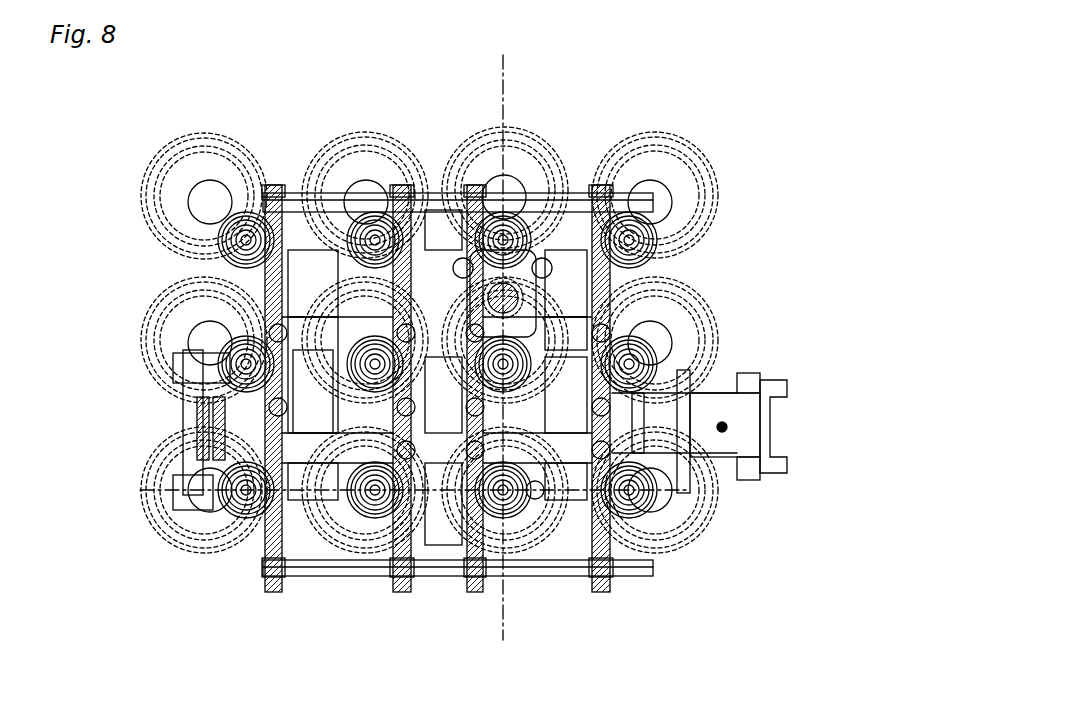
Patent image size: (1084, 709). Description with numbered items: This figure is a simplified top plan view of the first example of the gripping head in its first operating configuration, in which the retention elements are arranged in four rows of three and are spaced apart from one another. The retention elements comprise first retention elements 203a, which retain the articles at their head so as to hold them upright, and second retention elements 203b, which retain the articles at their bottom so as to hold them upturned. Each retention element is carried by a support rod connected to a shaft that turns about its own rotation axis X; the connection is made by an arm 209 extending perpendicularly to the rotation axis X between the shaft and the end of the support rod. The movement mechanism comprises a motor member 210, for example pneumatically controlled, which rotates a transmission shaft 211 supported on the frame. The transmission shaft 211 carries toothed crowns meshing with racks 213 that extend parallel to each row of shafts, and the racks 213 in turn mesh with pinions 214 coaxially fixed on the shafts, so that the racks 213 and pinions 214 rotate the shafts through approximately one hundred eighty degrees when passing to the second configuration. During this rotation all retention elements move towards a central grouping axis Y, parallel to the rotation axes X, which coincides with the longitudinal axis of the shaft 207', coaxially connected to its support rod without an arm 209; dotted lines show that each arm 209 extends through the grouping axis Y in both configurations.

The first retention elements 203a is at (222, 150).
The second retention elements 203b is at (180, 342).
The arm 209 is at (222, 190).
The pinions 214 is at (682, 222).
The racks 213 is at (263, 552).
The motor member 210 is at (748, 430).
The transmission shaft 211 is at (705, 480).
The shaft 207' is at (518, 568).
The rotation axis X is at (390, 338).
The central grouping axis Y is at (505, 497).